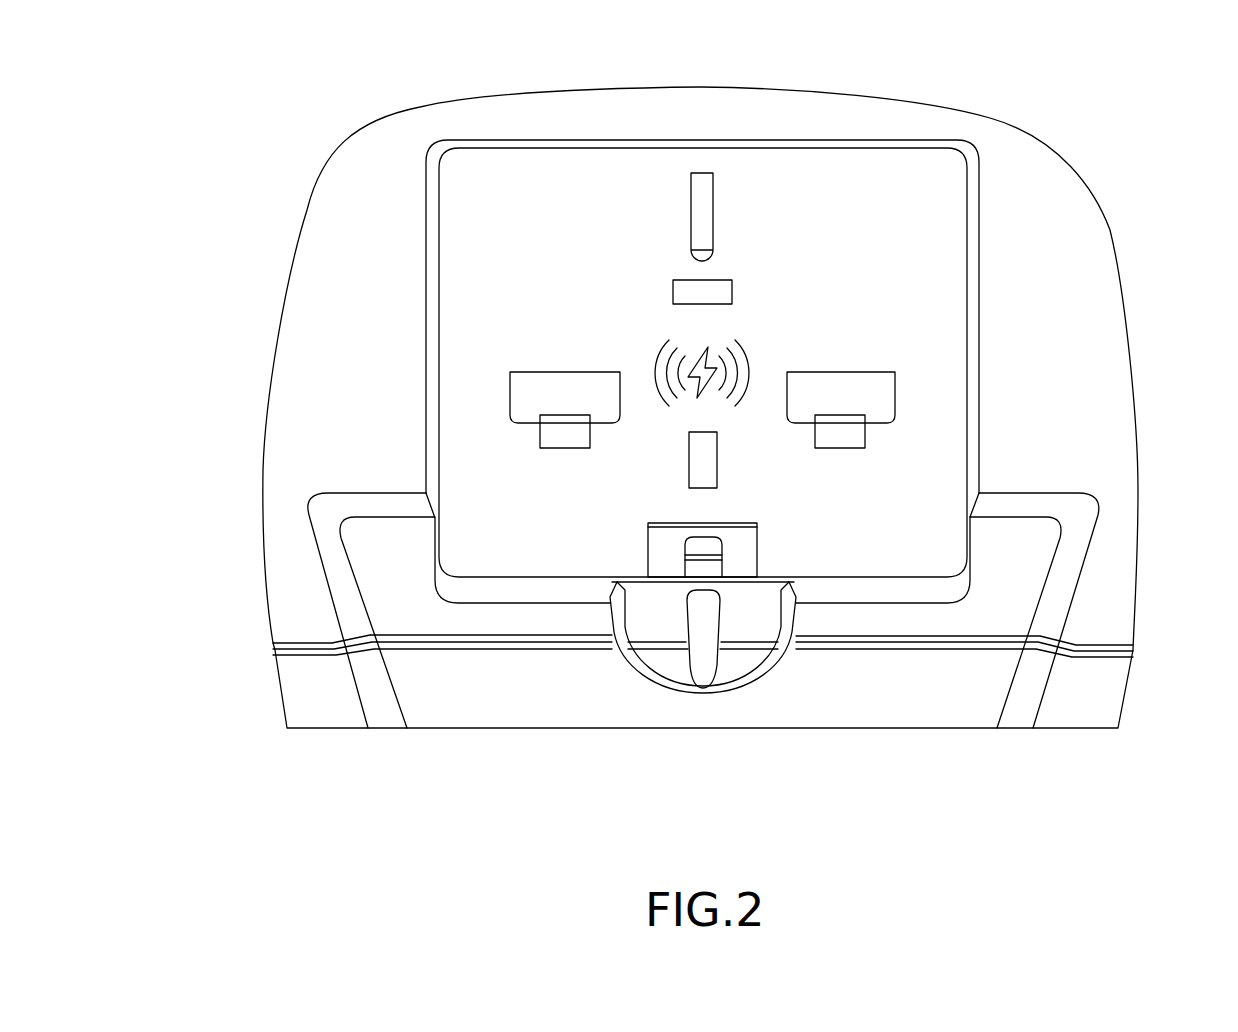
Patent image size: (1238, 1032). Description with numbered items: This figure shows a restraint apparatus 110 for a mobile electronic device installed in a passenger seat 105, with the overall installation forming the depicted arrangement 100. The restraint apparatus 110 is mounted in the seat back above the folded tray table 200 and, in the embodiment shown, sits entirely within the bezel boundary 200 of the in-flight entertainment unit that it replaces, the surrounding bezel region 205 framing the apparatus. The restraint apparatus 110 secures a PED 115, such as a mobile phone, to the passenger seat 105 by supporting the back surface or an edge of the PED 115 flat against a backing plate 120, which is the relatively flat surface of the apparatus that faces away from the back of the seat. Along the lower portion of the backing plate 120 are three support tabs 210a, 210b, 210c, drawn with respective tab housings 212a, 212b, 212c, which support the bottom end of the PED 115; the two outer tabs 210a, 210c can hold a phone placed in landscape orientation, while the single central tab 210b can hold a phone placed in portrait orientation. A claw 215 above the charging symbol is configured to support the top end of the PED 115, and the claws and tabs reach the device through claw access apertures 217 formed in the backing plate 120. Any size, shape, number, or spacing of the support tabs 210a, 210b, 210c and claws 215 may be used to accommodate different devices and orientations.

The device holder system 100 is at (248, 60).
The passenger seat 105 is at (290, 388).
The restraint apparatus 110 is at (430, 200).
The PED 115 is at (457, 268).
The backing plate 120 is at (950, 213).
The folded tray table 200 is at (297, 685).
The bezel 205 is at (843, 145).
The support tab 210a is at (565, 424).
The support tab 210b is at (700, 552).
The support tab 210c is at (840, 424).
The port housing 212a is at (522, 383).
The port housing 212b is at (753, 537).
The port housing 212c is at (877, 402).
The claw 215 is at (717, 290).
The claw access aperture 217 is at (702, 185).